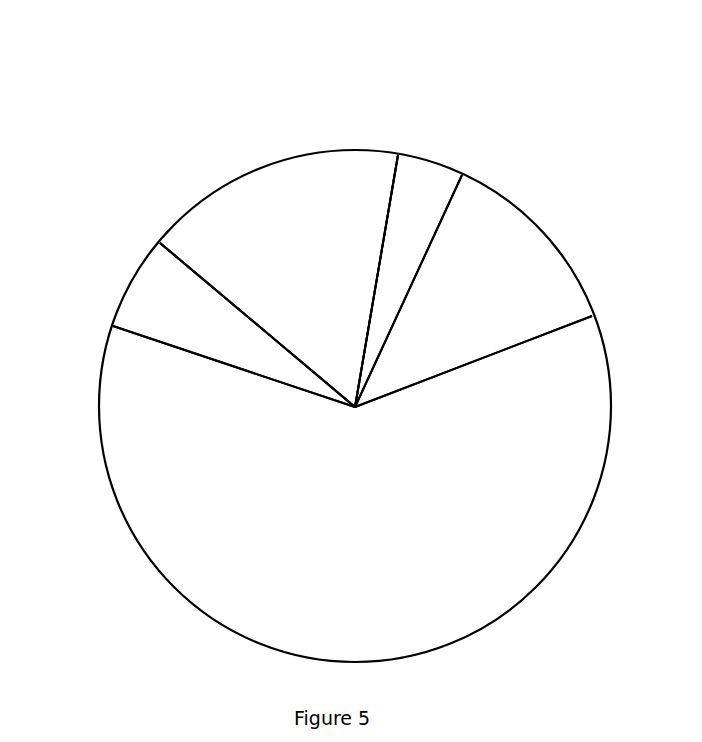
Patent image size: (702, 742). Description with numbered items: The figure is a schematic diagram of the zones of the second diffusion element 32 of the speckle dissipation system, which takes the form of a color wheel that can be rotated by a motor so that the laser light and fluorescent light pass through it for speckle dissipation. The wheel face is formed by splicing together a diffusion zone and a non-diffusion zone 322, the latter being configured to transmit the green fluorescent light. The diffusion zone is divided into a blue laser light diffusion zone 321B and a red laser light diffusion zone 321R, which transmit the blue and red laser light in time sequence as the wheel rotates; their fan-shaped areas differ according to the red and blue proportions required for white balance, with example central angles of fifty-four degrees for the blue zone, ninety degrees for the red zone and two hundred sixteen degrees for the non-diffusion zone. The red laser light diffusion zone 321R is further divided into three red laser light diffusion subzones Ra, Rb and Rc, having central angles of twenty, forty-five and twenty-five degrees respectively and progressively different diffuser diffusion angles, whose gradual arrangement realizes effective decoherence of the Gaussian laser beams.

The second diffusion element 32 is at (373, 127).
The red laser light diffusion subzone Ra is at (428, 170).
The red laser light diffusion subzone Rb is at (312, 180).
The red laser light diffusion subzone Rc is at (167, 303).
The red laser light diffusion zone 321R is at (200, 197).
The blue laser light diffusion zone 321B is at (520, 252).
The non-diffusion zone 322 is at (155, 543).